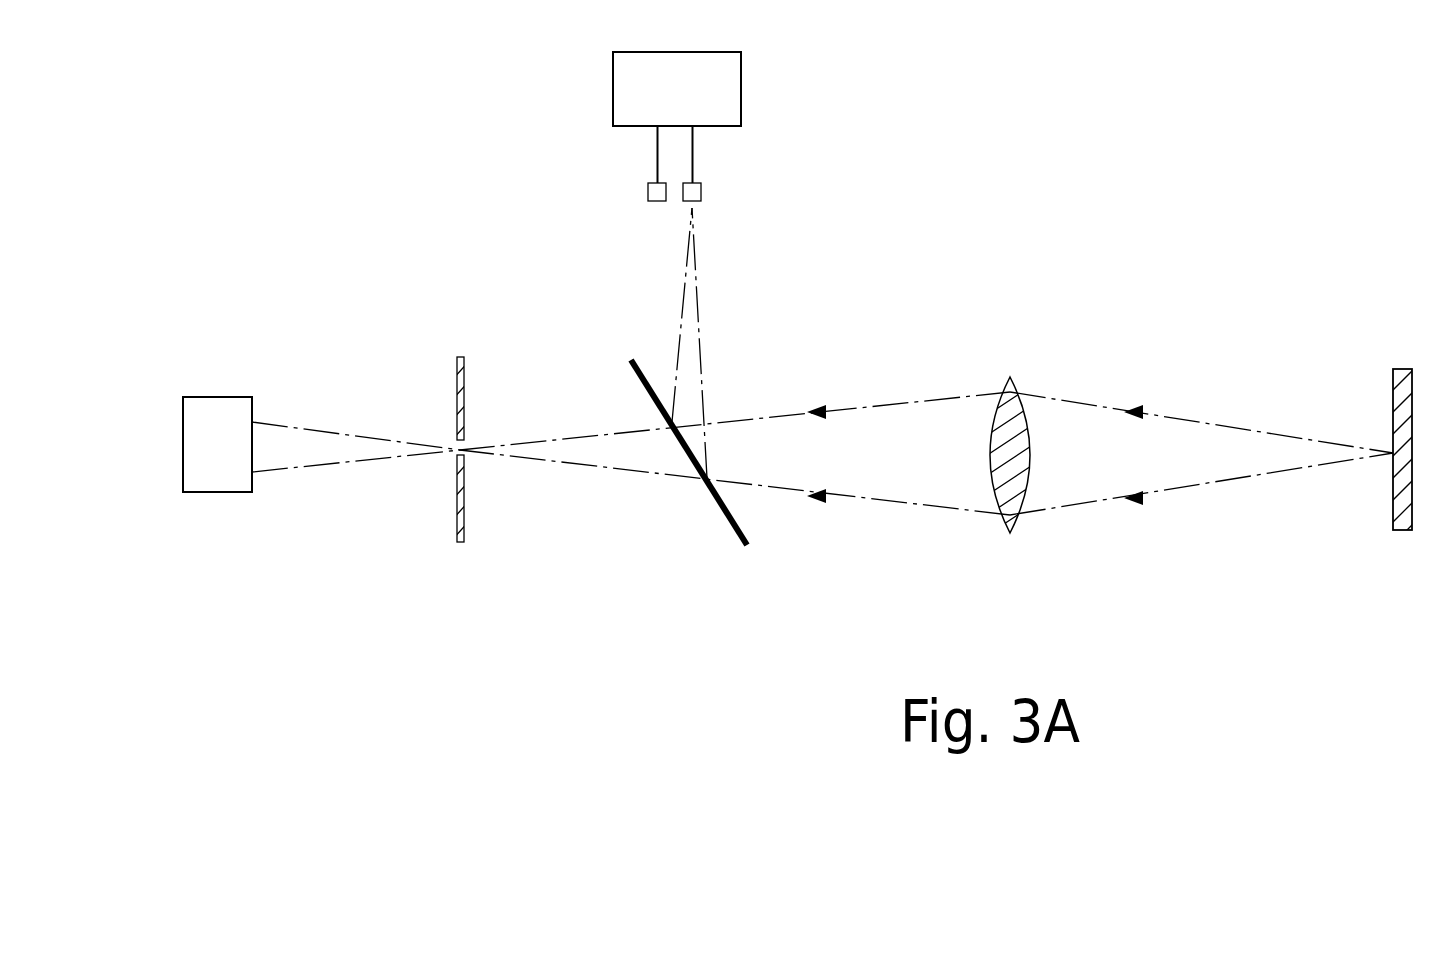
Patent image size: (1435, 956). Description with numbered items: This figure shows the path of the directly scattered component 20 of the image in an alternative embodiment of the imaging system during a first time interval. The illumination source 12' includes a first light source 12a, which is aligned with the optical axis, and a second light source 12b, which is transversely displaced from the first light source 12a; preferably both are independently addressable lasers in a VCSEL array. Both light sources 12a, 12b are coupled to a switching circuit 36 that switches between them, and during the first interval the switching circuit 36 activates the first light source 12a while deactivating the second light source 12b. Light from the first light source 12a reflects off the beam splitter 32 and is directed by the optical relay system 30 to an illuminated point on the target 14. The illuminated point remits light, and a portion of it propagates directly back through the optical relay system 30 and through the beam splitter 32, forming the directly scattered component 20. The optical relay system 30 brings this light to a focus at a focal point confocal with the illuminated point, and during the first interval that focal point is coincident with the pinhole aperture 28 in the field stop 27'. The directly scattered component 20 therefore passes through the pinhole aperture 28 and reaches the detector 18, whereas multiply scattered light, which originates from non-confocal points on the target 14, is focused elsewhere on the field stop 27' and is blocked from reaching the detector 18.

The illumination source 12' is at (501, 78).
The switching circuit 36 is at (741, 87).
The first light source 12a is at (701, 193).
The second light source 12b is at (648, 193).
The detector 18 is at (220, 492).
The directly scattered component 20 is at (1080, 402).
The pinhole aperture 28 is at (467, 447).
The field stop 27' is at (503, 507).
The beam splitter 32 is at (733, 533).
The optical relay system 30 is at (1002, 535).
The target 14 is at (1400, 530).